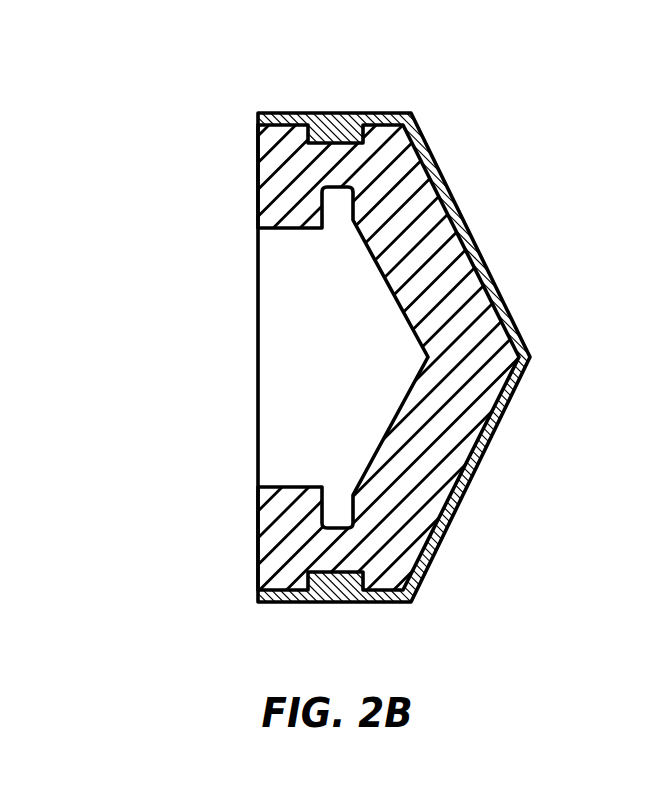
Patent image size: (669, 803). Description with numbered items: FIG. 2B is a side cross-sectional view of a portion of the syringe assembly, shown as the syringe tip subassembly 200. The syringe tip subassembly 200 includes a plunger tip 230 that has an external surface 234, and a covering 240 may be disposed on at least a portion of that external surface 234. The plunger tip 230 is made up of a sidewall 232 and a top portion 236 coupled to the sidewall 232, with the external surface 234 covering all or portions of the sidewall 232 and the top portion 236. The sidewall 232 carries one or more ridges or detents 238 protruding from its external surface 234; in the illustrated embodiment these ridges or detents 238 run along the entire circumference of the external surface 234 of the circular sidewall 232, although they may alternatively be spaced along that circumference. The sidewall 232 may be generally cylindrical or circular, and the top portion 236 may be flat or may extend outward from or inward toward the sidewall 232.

The syringe tip subassembly 200 is at (334, 401).
The plunger tip 230 is at (282, 177).
The sidewall 232 is at (333, 158).
The external surface 234 is at (485, 268).
The top portion 236 is at (478, 406).
The ridges or detents 238 is at (285, 582).
The covering 240 is at (480, 473).